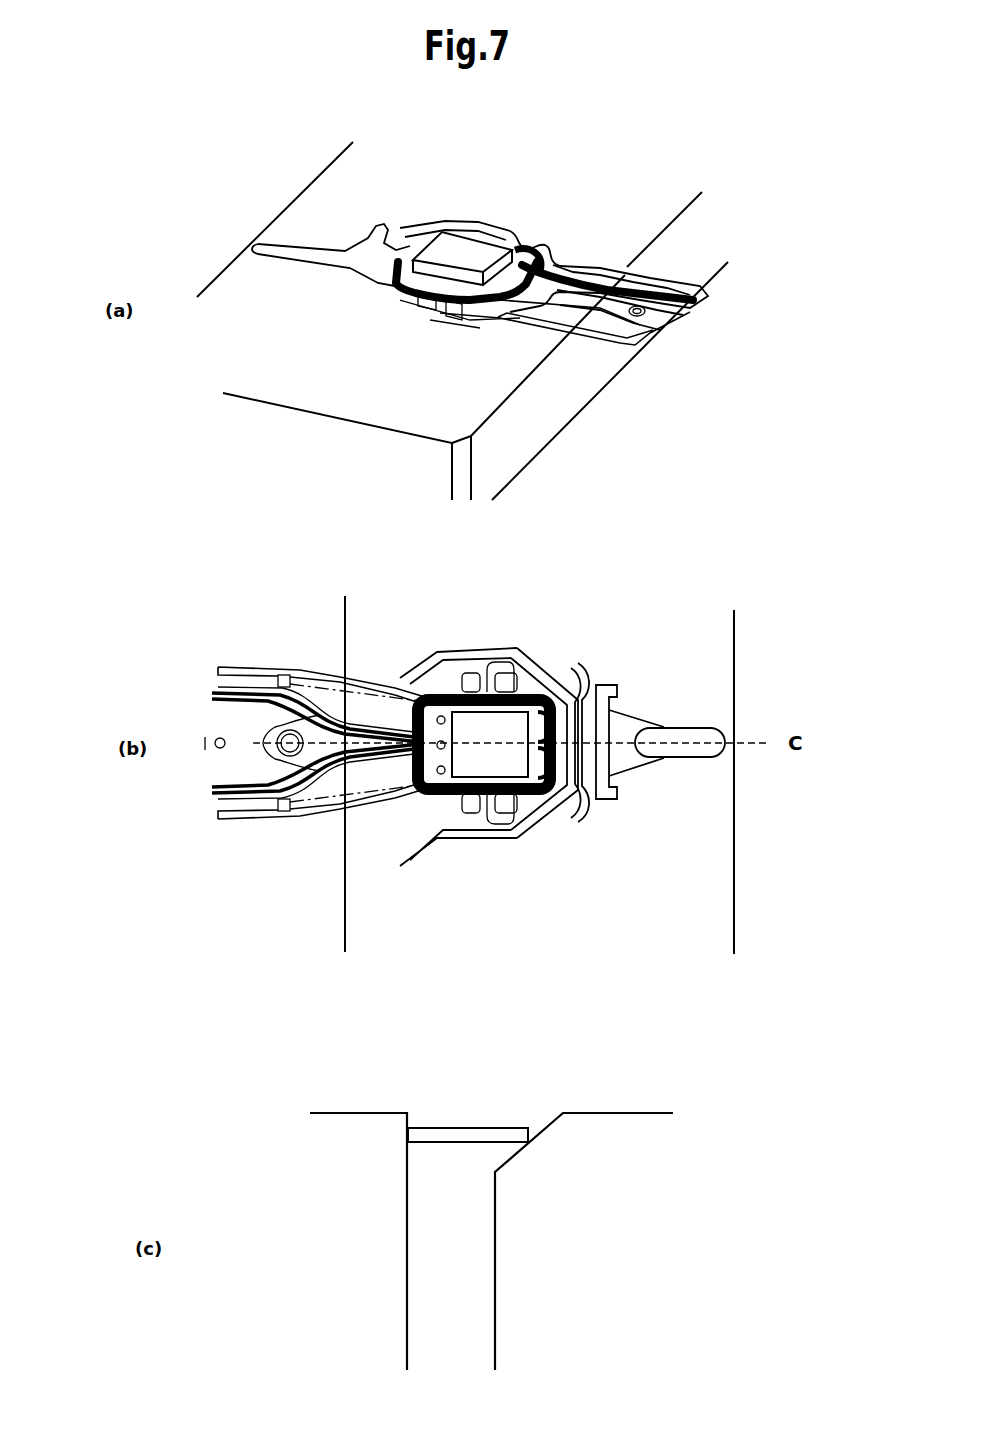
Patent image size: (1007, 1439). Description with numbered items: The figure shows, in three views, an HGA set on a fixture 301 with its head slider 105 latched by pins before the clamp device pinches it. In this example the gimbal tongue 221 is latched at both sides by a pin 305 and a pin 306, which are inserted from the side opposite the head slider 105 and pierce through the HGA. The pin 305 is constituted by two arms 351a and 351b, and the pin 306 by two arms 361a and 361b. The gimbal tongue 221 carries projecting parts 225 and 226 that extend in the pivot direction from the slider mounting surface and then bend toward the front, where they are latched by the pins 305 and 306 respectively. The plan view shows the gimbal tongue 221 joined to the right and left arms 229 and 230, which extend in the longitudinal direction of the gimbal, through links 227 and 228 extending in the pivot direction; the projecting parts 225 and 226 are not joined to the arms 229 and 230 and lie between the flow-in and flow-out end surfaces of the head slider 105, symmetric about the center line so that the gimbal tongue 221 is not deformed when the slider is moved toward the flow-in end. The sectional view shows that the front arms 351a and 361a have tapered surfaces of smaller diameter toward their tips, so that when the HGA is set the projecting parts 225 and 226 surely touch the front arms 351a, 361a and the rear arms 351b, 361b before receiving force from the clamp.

The head slider 105 is at (440, 224).
The gimbal tongue 221 is at (512, 317).
The projecting part 225 is at (497, 823).
The projecting part 226 is at (505, 667).
The link 227 is at (443, 805).
The link 228 is at (425, 660).
The arm 229 is at (578, 812).
The arm 230 is at (583, 672).
The fixture 301 is at (268, 403).
The pin 305 is at (548, 151).
The pin 306 is at (353, 347).
The front arm 351a is at (490, 222).
The rear arm 351b is at (524, 236).
The front arm 361a is at (400, 307).
The rear arm 361b is at (457, 328).